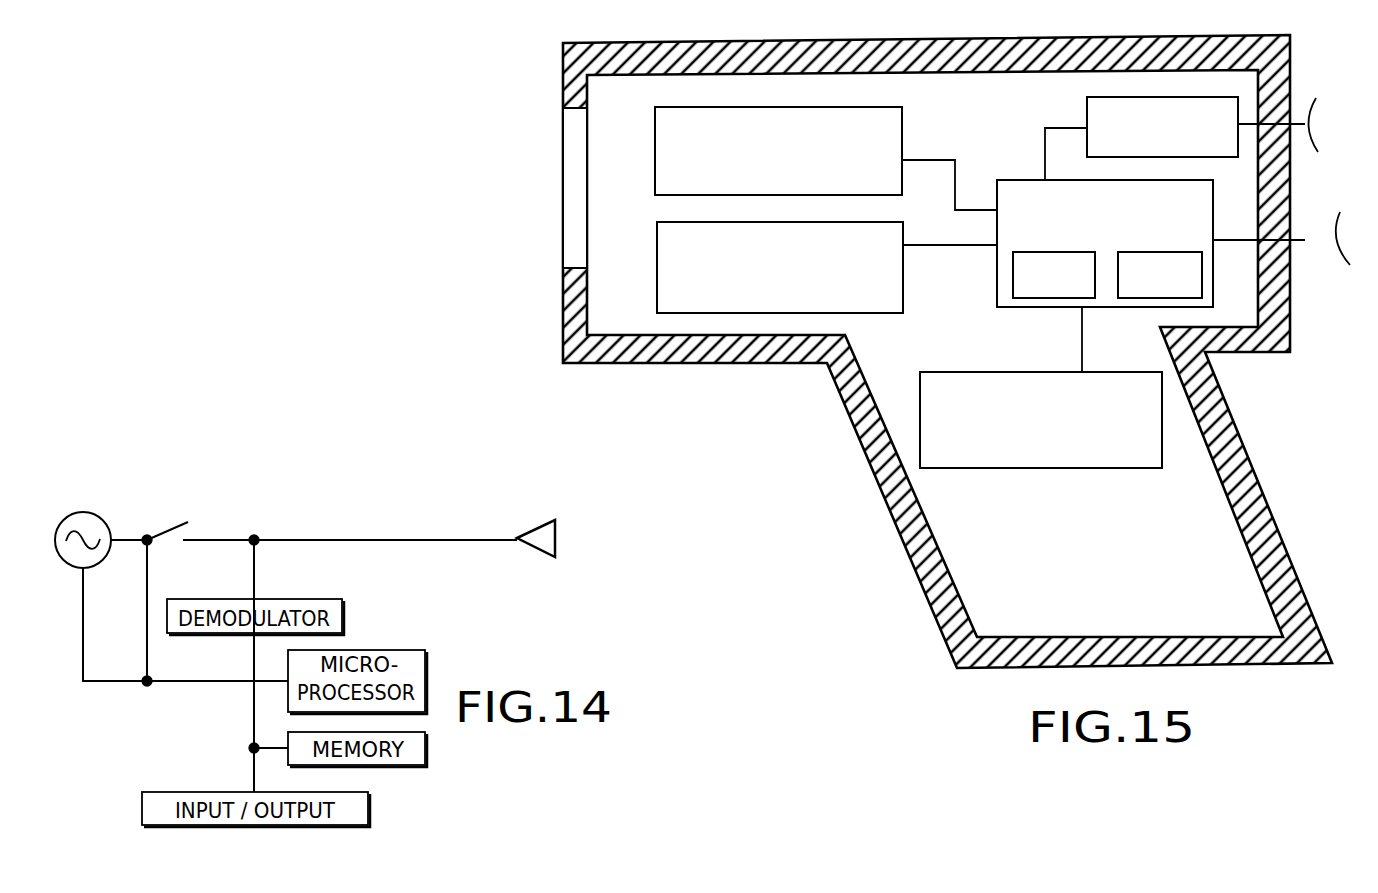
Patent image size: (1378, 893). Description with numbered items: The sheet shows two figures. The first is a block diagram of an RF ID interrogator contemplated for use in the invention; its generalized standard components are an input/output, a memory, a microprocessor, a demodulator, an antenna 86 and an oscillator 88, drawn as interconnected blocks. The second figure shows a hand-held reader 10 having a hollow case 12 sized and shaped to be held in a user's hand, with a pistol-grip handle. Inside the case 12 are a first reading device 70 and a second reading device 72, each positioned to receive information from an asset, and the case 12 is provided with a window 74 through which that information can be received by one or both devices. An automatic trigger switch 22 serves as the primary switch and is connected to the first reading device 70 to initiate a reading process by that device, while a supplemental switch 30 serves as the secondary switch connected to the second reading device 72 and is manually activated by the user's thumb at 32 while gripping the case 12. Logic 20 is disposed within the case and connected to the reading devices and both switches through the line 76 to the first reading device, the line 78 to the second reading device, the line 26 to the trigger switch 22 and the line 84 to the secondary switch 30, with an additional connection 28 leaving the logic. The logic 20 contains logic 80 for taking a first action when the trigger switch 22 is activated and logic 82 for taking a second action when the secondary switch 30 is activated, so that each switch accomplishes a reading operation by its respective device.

In FIG. 15, the reader 10 is at (855, 588).
In FIG. 15, the case 12 is at (685, 365).
In FIG. 15, the logic 20 is at (997, 275).
In FIG. 15, the automatic trigger switch 22 is at (1042, 470).
In FIG. 15, the line to the trigger switch 26 is at (1082, 335).
In FIG. 15, the output connection 28 is at (1305, 240).
In FIG. 15, the supplemental switch 30 is at (1087, 110).
In FIG. 15, the thumb activation position 32 is at (1318, 125).
In FIG. 15, the first reading device 70 is at (818, 105).
In FIG. 15, the second reading device 72 is at (760, 316).
In FIG. 15, the window 74 is at (568, 110).
In FIG. 15, the line to the first reading device 76 is at (933, 160).
In FIG. 15, the line to the second reading device 78 is at (927, 245).
In FIG. 15, the logic for taking a first action 80 is at (1072, 252).
In FIG. 15, the logic for taking a second action 82 is at (1135, 252).
In FIG. 15, the line to the secondary switch 84 is at (1045, 142).
In FIG. 14, the antenna 86 is at (557, 538).
In FIG. 14, the oscillator 88 is at (88, 512).